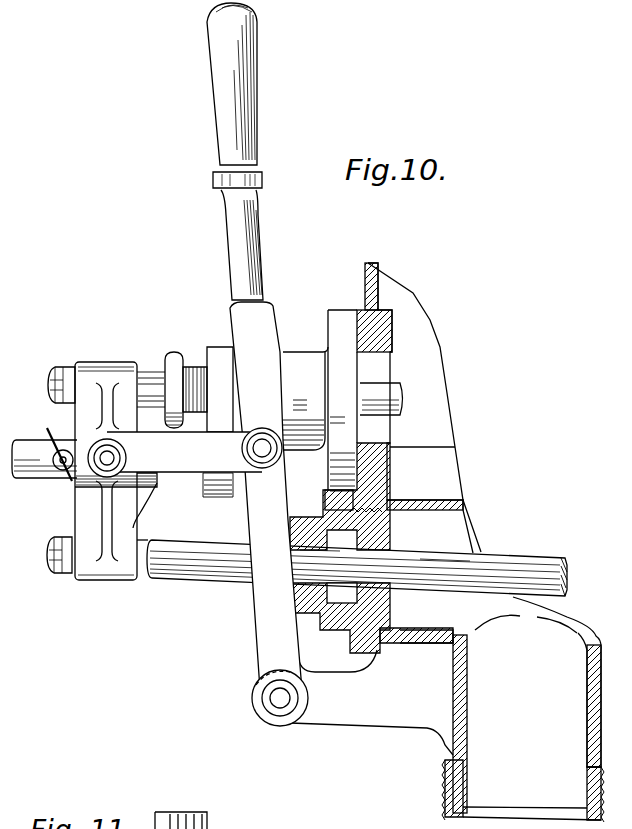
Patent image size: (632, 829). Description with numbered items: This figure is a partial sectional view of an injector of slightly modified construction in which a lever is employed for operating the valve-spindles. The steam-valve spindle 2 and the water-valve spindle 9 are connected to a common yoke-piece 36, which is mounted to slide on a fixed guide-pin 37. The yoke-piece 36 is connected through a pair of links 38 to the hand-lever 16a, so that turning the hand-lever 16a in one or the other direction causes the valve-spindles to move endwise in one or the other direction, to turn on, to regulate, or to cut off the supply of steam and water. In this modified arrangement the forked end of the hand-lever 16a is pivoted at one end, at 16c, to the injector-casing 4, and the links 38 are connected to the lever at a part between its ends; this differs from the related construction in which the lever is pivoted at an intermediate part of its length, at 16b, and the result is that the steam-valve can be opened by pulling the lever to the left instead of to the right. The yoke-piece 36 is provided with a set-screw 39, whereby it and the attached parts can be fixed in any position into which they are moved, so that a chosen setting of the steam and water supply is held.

The steam-valve spindle 2 is at (382, 467).
The injector-casing 4 is at (447, 709).
The water-valve spindle 9 is at (482, 566).
The hand-lever 16a is at (222, 125).
The pivot of hand-lever 16b is at (195, 496).
The pivot of hand-lever 16c is at (286, 700).
The yoke-piece 36 is at (141, 513).
The guide-pin 37 is at (42, 470).
The links 38 is at (264, 414).
The set-screw 39 is at (55, 442).